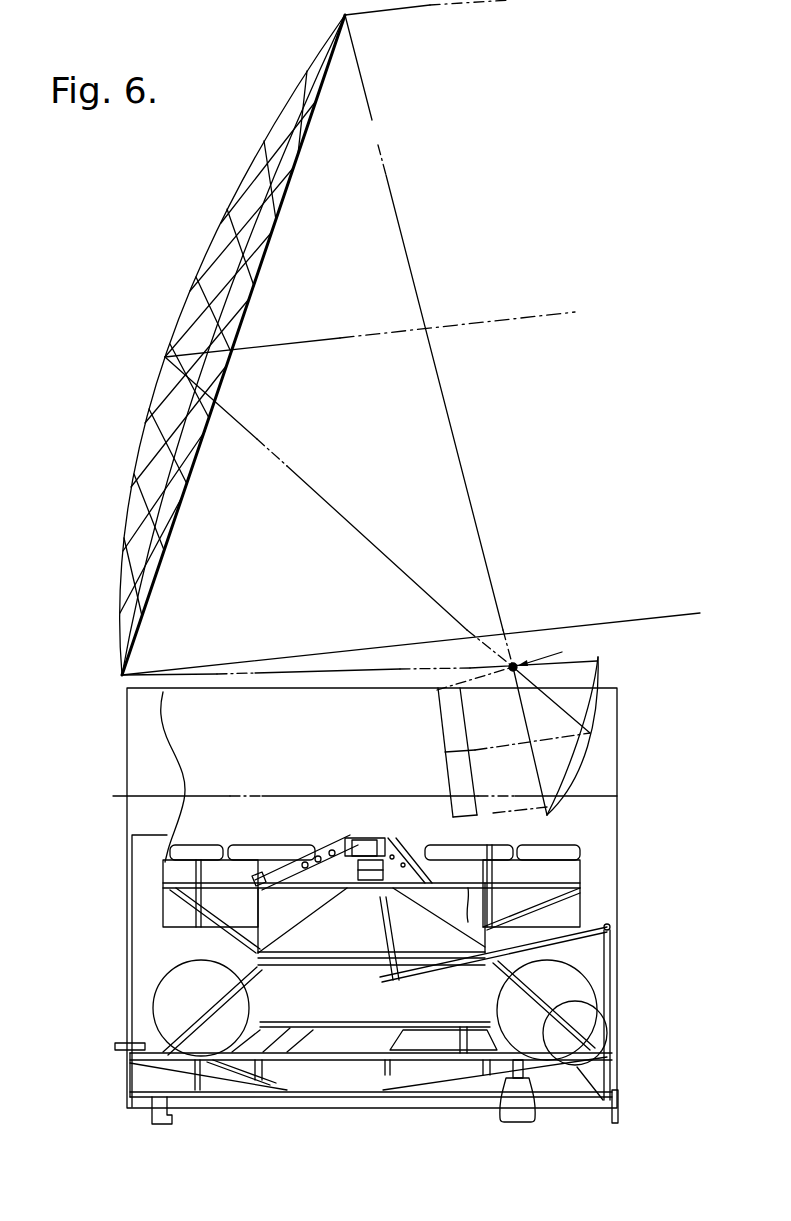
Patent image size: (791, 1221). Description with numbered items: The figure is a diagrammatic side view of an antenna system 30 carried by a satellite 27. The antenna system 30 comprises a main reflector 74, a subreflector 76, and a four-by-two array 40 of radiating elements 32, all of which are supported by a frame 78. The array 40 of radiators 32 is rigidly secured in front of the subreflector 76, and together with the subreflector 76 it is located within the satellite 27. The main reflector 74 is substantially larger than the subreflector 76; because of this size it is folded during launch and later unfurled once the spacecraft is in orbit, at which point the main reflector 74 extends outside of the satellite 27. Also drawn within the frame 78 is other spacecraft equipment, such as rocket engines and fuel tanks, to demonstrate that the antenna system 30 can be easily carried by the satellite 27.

The satellite 27 is at (614, 587).
The antenna system 30 is at (118, 364).
The radiating element 32 is at (447, 725).
The array of radiating elements 40 is at (440, 772).
The main reflector 74 is at (236, 198).
The subreflector 76 is at (603, 675).
The frame 78 is at (617, 772).